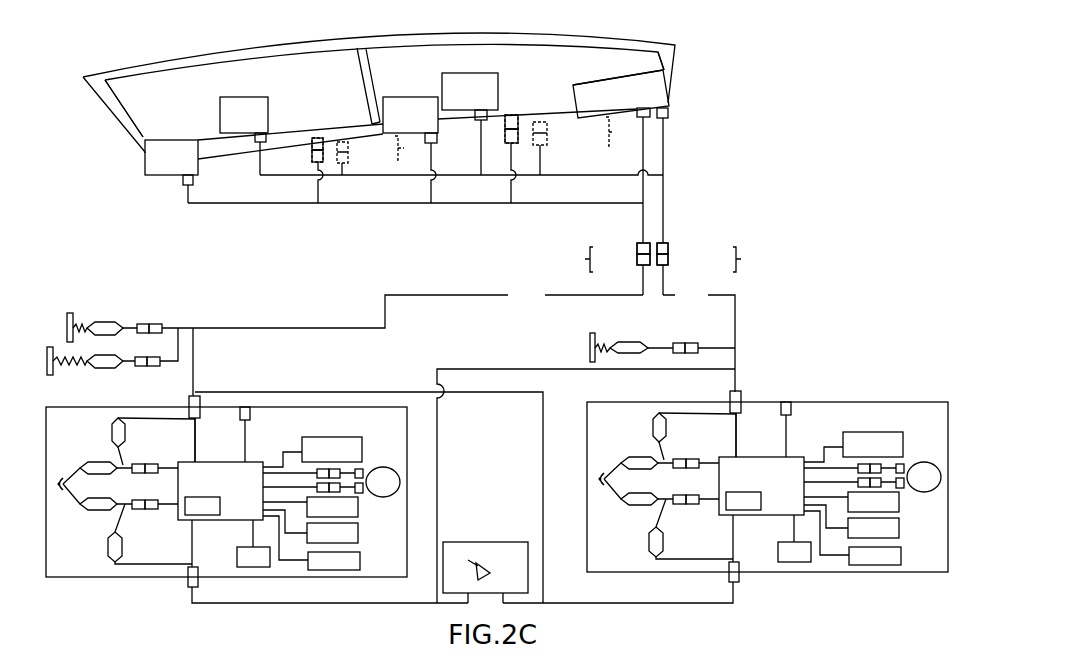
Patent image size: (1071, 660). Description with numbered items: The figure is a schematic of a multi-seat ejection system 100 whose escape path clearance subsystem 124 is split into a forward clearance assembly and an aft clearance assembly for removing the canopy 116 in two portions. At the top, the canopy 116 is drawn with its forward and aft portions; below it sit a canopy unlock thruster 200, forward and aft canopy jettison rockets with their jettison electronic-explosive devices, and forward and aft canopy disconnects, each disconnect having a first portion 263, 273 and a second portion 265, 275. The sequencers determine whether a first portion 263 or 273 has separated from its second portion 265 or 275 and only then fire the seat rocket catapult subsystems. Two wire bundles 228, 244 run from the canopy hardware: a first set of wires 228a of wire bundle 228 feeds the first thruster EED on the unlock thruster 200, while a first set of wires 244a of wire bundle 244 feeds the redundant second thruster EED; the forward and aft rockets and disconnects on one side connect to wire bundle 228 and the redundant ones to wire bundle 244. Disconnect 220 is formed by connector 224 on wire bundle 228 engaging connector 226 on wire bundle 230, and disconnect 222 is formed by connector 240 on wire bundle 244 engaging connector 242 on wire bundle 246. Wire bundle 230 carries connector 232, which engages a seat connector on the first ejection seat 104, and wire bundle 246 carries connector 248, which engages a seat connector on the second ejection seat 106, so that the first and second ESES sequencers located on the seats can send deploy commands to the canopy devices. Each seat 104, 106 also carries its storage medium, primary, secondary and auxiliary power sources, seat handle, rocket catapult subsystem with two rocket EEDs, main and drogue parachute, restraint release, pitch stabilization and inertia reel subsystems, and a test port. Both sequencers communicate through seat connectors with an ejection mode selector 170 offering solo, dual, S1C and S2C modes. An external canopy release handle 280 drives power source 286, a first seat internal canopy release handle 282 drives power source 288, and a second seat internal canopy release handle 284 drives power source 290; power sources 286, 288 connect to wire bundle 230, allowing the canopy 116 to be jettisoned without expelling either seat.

The multi-seat ejection system 100 is at (90, 50).
The first ejection seat 104 is at (226, 492).
The second ejection seat 106 is at (767, 487).
The canopy 116 is at (317, 50).
The escape path clearance subsystem 124 is at (694, 62).
The ejection mode selector 170 is at (484, 542).
The canopy unlock thruster 200 is at (621, 94).
The disconnect 220 is at (603, 257).
The disconnect 222 is at (713, 257).
The connector 224 is at (637, 249).
The connector 226 is at (637, 260).
The wire bundle 228 is at (639, 257).
The first set of wires 228a is at (645, 138).
The wire bundle 230 is at (402, 307).
The connector 232 is at (189, 400).
The connector 240 is at (668, 248).
The connector 242 is at (668, 259).
The wire bundle 244 is at (667, 256).
The first set of wires 244a is at (665, 154).
The wire bundle 246 is at (699, 339).
The connector 248 is at (758, 417).
The first portion 263 is at (318, 138).
The second portion 265 is at (314, 150).
The first portion 273 is at (511, 116).
The second portion 275 is at (516, 130).
The external canopy release handle 280 is at (49, 347).
The first seat internal canopy release handle 282 is at (68, 313).
The second seat internal canopy release handle 284 is at (590, 345).
The power source 286 is at (104, 368).
The power source 288 is at (104, 322).
The power source 290 is at (628, 342).